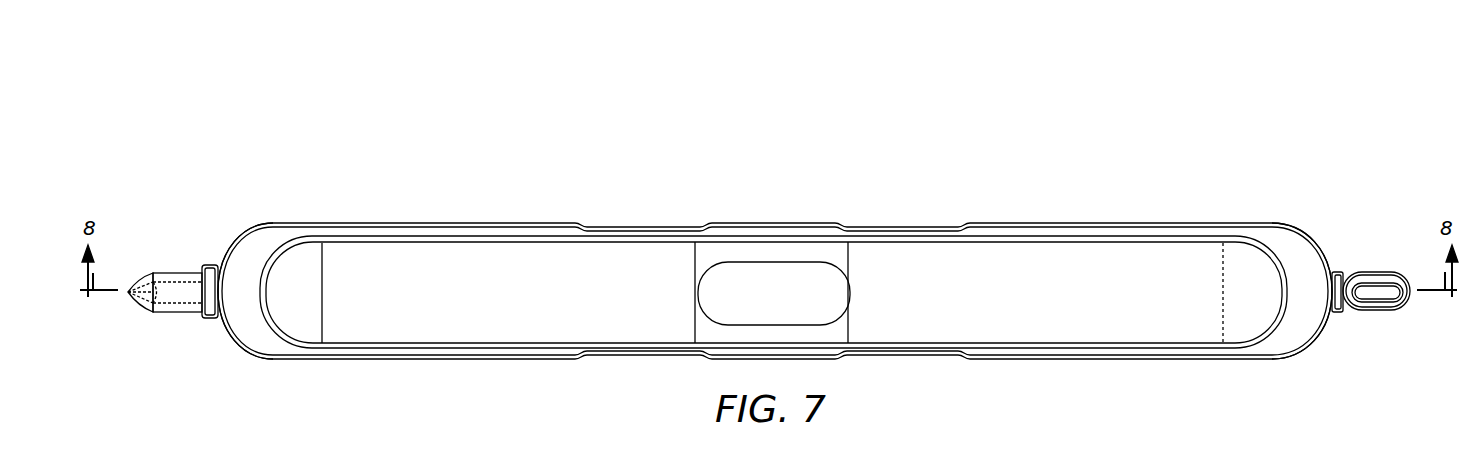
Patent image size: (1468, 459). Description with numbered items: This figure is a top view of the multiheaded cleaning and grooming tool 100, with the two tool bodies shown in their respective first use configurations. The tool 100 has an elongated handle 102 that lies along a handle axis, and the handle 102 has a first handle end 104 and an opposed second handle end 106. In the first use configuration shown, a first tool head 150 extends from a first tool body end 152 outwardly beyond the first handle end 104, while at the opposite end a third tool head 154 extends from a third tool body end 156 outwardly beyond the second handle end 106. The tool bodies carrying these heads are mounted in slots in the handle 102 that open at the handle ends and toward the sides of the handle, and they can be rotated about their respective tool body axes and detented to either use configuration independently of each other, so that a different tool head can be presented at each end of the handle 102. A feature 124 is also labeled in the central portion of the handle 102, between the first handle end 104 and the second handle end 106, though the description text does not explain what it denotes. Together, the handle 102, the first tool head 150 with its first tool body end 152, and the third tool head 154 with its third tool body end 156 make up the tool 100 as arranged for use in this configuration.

The multiheaded cleaning and grooming tool 100 is at (470, 150).
The elongated handle 102 is at (628, 262).
The first handle end 104 is at (245, 248).
The second handle end 106 is at (1297, 248).
The button 124 is at (918, 258).
The first tool head 150 is at (168, 270).
The first tool body end 152 is at (215, 320).
The third tool head 154 is at (1377, 312).
The third tool body end 156 is at (1333, 268).